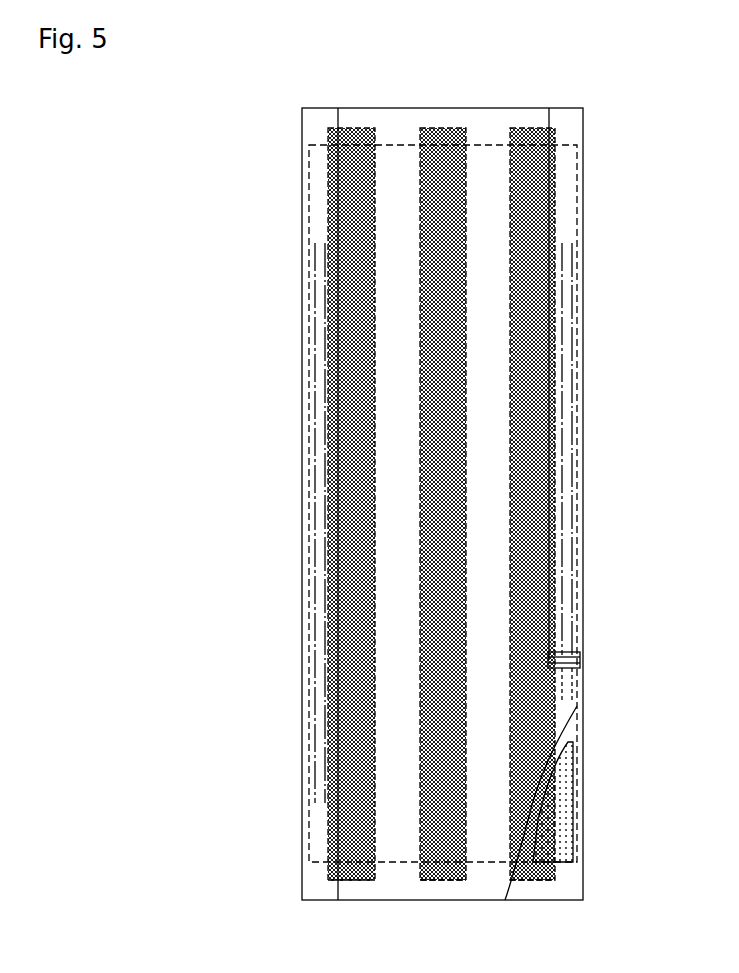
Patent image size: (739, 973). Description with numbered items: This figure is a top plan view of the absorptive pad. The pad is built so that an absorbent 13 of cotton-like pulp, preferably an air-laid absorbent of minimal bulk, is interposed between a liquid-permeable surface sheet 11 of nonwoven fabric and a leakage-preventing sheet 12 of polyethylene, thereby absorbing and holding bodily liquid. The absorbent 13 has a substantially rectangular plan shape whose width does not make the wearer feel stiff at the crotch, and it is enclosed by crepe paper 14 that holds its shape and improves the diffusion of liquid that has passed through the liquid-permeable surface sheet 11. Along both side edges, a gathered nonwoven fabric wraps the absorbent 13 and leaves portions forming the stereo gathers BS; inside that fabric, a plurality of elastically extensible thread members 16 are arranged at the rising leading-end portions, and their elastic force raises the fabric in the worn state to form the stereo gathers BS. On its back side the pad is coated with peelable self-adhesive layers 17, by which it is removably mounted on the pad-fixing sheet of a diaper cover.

The liquid-permeable surface sheet 11 is at (497, 710).
The leakage-preventing sheet 12 is at (565, 882).
The absorbent 13 is at (557, 820).
The crepe paper 14 is at (560, 740).
The elastically extensible thread members 16 is at (325, 325).
The peelable self-adhesive layers 17 is at (352, 880).
The stereo gathers BS is at (338, 655).